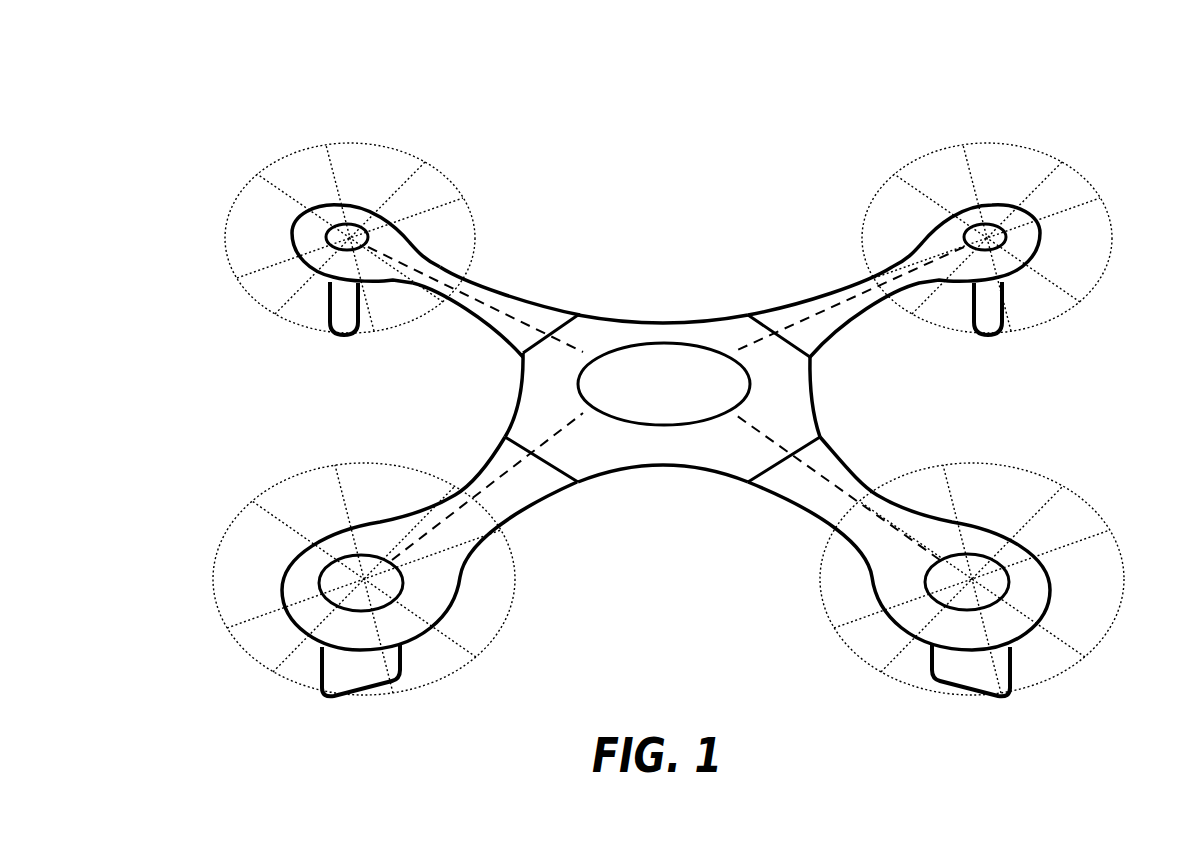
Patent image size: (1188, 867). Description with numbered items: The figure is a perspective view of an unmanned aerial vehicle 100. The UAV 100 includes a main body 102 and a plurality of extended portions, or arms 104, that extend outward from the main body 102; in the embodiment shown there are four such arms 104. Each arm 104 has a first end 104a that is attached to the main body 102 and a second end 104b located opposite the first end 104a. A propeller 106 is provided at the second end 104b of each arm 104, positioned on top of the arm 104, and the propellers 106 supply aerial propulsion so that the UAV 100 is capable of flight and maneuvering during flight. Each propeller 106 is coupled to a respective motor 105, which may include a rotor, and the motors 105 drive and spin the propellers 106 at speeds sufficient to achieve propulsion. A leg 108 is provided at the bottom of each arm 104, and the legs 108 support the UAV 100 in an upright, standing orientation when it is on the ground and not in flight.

The unmanned aerial vehicle 100 is at (488, 118).
The main body 102 is at (663, 323).
The arm 104 is at (463, 308).
The first end 104a is at (553, 307).
The second end 104b is at (301, 223).
The motor 105 is at (327, 231).
The propeller 106 is at (1040, 155).
The leg 108 is at (1003, 307).